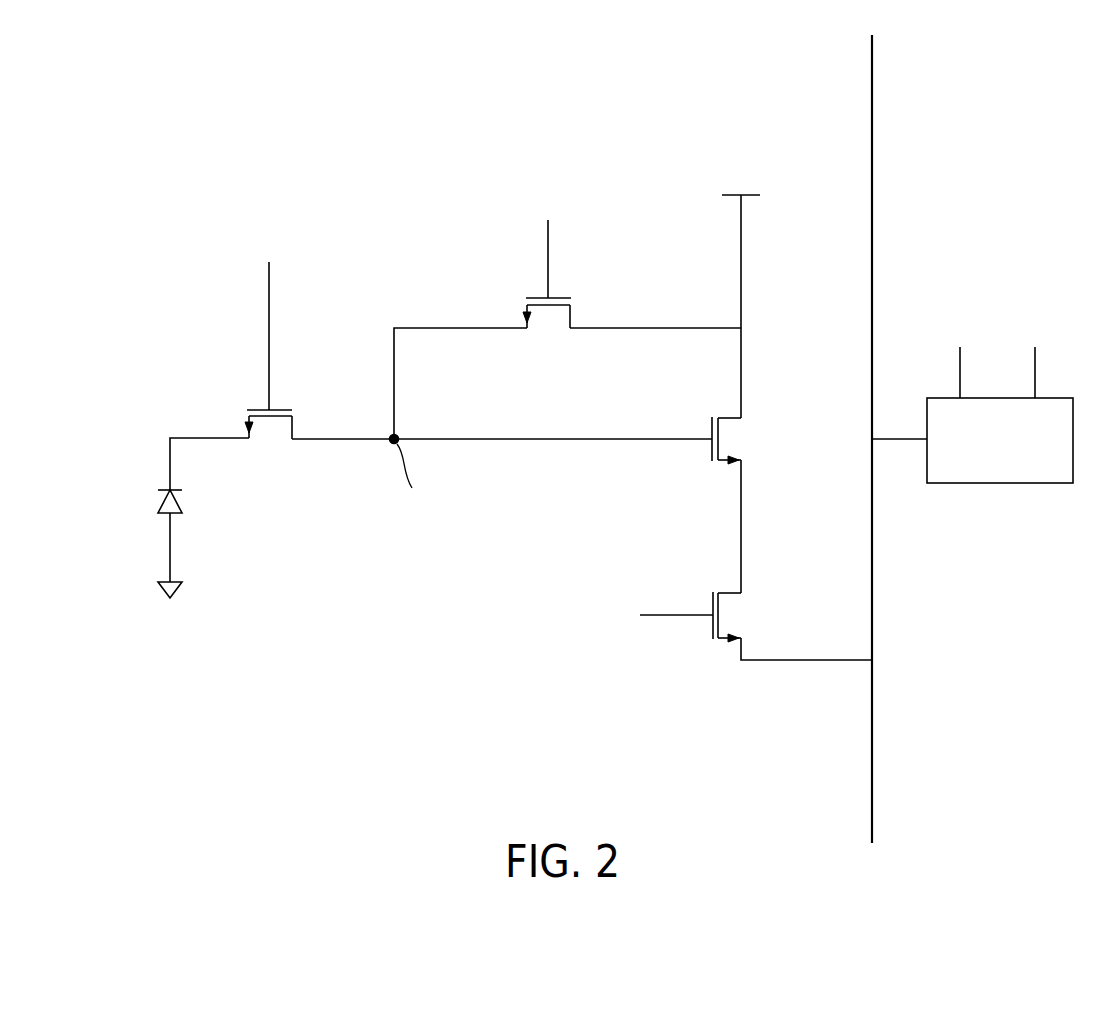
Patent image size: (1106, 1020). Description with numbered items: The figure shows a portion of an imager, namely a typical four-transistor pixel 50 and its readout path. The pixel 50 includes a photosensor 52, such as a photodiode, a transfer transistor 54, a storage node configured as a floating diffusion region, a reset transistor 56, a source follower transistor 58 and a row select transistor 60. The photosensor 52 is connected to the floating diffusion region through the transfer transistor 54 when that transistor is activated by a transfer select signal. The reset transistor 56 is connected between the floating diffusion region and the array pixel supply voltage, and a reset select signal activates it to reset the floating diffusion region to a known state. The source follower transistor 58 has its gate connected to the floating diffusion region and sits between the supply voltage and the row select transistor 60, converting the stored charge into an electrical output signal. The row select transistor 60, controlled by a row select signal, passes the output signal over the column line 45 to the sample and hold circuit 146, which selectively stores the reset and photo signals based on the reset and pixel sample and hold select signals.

The pixel 50 is at (125, 198).
The photosensor 52 is at (160, 489).
The transfer transistor 54 is at (258, 409).
The reset transistor 56 is at (534, 298).
The source follower transistor 58 is at (730, 417).
The row select transistor 60 is at (722, 592).
The column line 45 is at (873, 83).
The sample and hold circuit 146 is at (1017, 448).